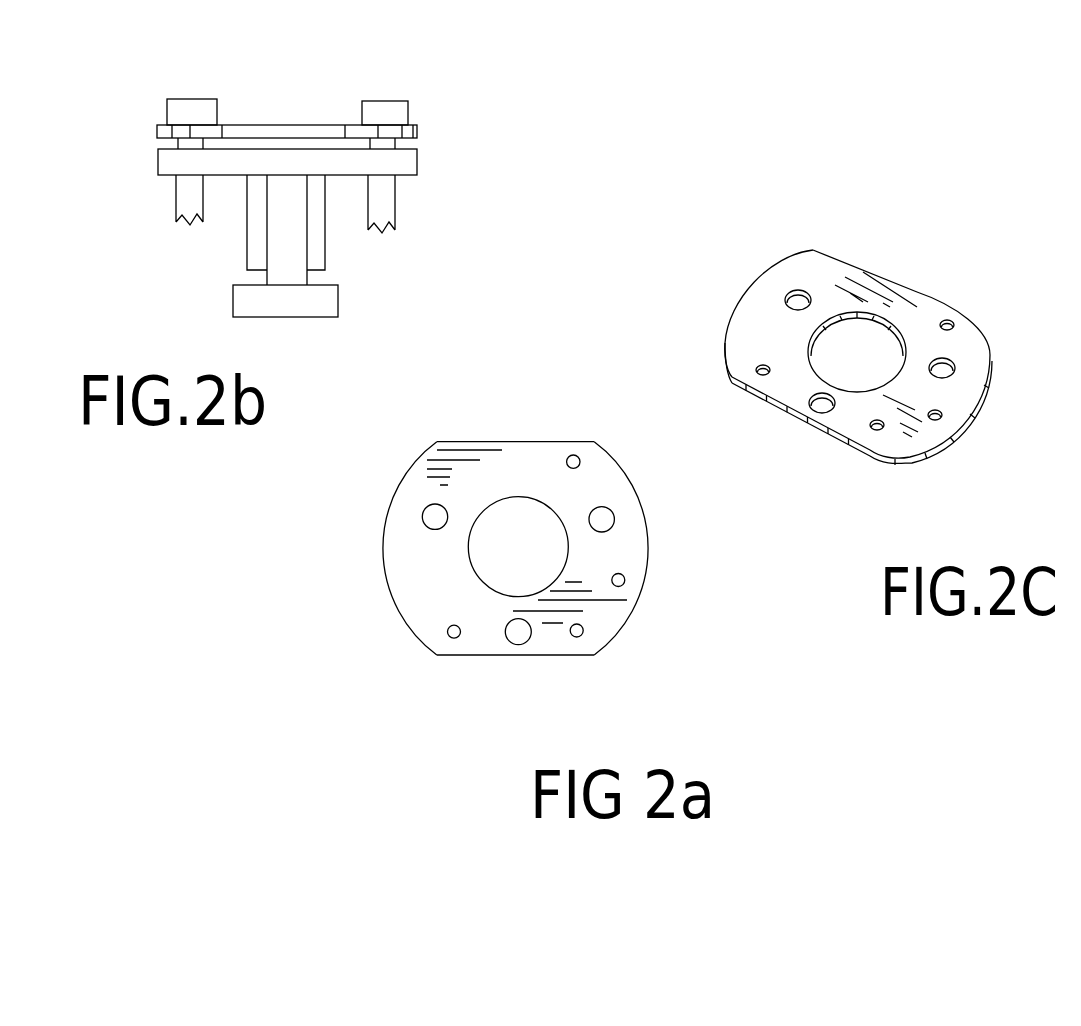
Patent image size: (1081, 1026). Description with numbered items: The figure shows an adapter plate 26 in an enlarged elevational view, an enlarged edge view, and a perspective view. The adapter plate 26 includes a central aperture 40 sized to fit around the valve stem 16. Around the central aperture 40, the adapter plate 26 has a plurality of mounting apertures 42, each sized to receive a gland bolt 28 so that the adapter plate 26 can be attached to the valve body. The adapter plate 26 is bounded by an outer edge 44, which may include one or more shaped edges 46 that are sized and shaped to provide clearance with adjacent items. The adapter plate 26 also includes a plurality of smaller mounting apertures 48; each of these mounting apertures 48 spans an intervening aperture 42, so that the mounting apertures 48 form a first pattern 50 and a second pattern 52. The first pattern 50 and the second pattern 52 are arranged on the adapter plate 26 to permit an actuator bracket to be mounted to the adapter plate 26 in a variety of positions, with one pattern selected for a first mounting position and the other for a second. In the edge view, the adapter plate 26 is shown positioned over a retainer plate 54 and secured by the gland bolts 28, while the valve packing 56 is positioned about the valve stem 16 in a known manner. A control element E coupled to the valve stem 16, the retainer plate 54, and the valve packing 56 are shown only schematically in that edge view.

In FIG. 2B, the valve stem 16 is at (283, 207).
In FIG. 2B, the adapter plate 26 is at (317, 125).
In FIG. 2A, the adapter plate 26 is at (521, 581).
In FIG. 2C, the adapter plate 26 is at (874, 338).
In FIG. 2B, the gland bolt 28 is at (190, 99).
In FIG. 2B, the retainer plate 54 is at (165, 177).
In FIG. 2B, the valve packing 56 is at (245, 240).
In FIG. 2B, the control element E is at (338, 302).
In FIG. 2A, the central aperture 40 is at (487, 553).
In FIG. 2C, the central aperture 40 is at (896, 306).
In FIG. 2A, the mounting apertures 42 is at (427, 508).
In FIG. 2C, the mounting apertures 42 is at (800, 290).
In FIG. 2A, the outer edge 44 is at (628, 625).
In FIG. 2C, the outer edge 44 is at (975, 417).
In FIG. 2A, the shaped edges 46 is at (488, 441).
In FIG. 2C, the shaped edges 46 is at (824, 353).
In FIG. 2A, the mounting apertures 48 is at (575, 457).
In FIG. 2C, the mounting apertures 48 is at (952, 323).
In FIG. 2A, the first pattern 50 is at (435, 657).
In FIG. 2C, the first pattern 50 is at (826, 449).
In FIG. 2A, the second pattern 52 is at (526, 595).
In FIG. 2C, the second pattern 52 is at (866, 352).